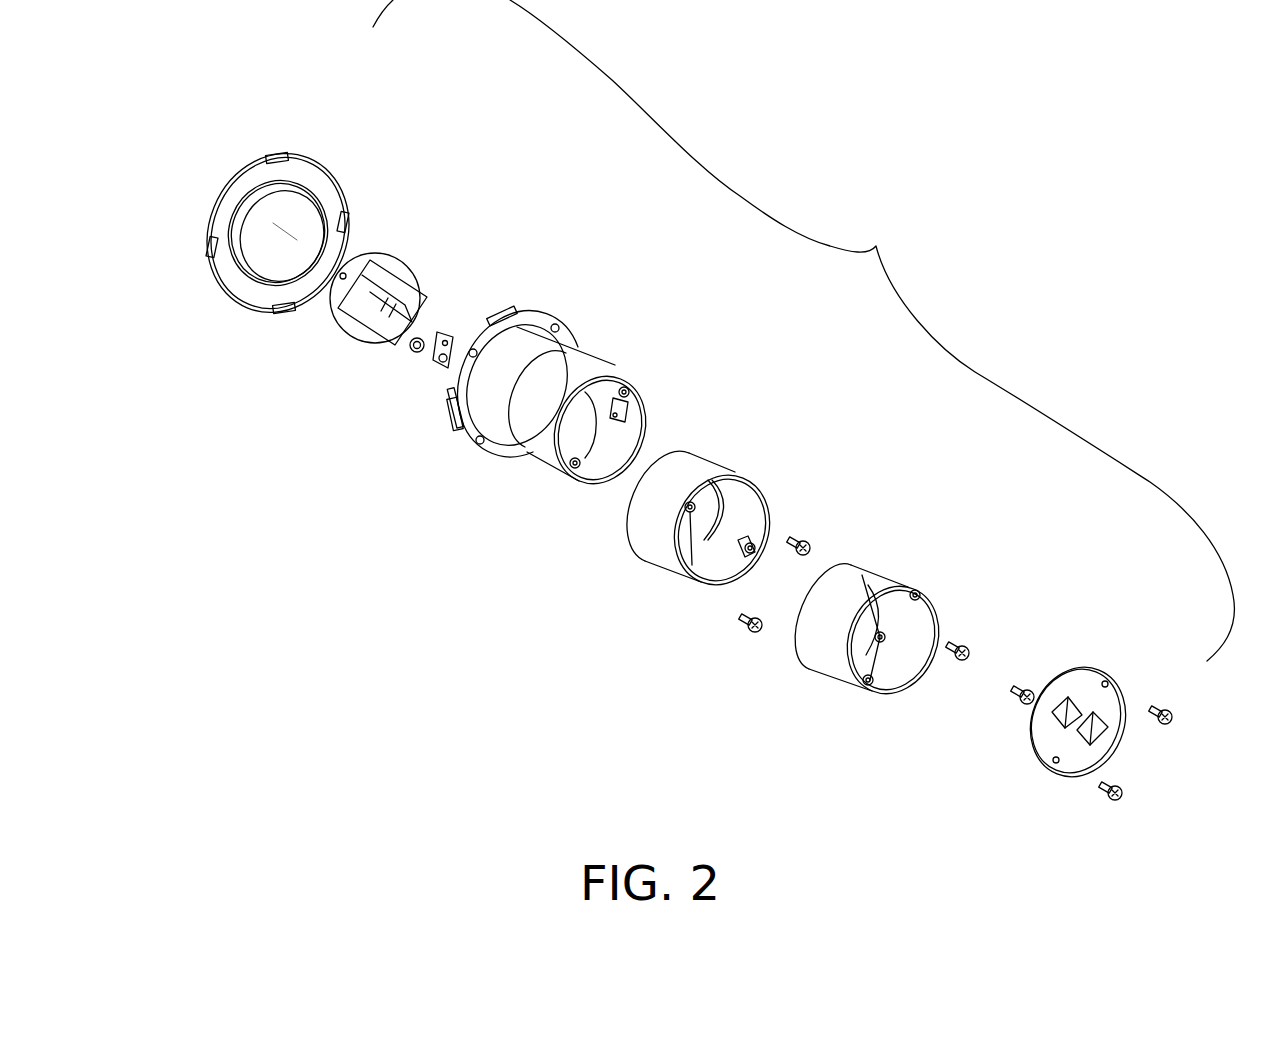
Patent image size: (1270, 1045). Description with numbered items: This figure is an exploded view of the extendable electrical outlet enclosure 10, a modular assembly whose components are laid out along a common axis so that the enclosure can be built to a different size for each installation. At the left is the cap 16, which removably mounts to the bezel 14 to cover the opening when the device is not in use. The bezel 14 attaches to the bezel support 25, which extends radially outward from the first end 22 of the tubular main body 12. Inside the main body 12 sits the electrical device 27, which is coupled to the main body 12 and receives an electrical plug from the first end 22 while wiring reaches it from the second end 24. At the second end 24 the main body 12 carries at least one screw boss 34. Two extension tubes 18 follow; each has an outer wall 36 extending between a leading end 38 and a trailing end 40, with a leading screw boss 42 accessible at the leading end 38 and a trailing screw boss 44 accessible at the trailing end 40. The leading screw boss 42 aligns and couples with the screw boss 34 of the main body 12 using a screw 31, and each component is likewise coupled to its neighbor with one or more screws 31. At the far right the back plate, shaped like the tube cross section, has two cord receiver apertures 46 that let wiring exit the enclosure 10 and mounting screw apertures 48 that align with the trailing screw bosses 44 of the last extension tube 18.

The extendable electrical outlet enclosure 10 is at (877, 247).
The main body 12 is at (636, 322).
The bezel 14 is at (310, 180).
The cap 16 is at (290, 237).
The extension tube 18 is at (761, 682).
The first end 22 is at (573, 424).
The second end 24 is at (622, 480).
The bezel support 25 is at (464, 445).
The electrical device 27 is at (397, 285).
The screw 31 is at (760, 618).
The screw boss 34 is at (578, 460).
The outer wall 36 is at (767, 529).
The leading end 38 is at (640, 482).
The trailing end 40 is at (753, 546).
The leading screw boss 42 is at (883, 636).
The trailing screw boss 44 is at (743, 580).
The cord receiver aperture 46 is at (1096, 704).
The mounting screw aperture 48 is at (1056, 762).